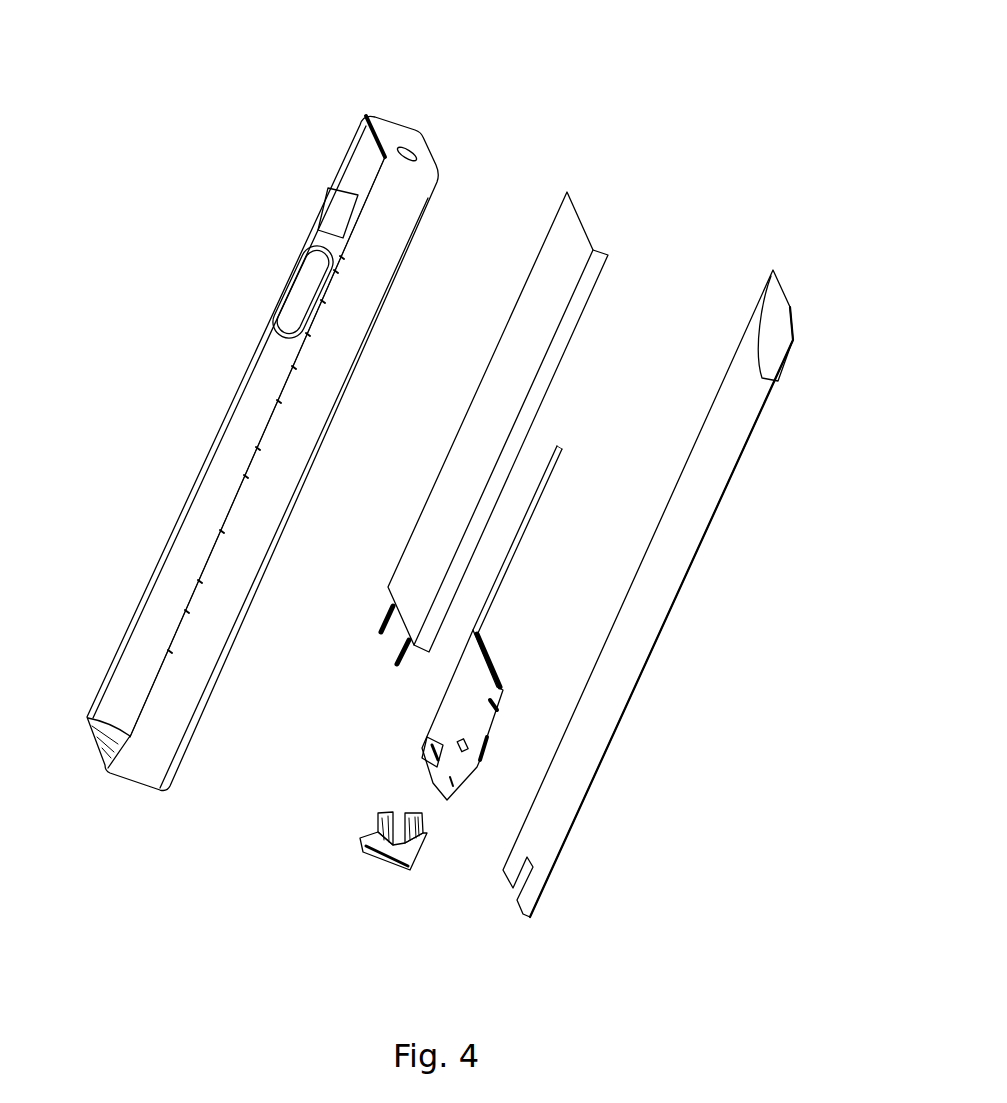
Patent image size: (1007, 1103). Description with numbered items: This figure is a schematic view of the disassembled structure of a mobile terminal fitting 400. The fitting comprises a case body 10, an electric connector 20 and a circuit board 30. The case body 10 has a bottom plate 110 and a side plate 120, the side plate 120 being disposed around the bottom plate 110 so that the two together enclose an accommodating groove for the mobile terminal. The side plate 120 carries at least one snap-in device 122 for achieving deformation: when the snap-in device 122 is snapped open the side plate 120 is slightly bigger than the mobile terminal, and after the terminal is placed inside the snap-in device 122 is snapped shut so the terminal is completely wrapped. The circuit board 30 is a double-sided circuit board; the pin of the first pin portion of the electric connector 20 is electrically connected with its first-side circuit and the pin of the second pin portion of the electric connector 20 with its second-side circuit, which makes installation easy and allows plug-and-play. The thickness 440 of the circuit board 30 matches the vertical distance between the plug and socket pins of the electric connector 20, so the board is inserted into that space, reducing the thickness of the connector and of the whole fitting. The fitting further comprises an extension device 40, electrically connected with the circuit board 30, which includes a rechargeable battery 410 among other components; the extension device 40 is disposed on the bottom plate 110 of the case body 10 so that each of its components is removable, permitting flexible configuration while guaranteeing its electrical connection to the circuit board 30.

The mobile terminal fitting 400 is at (178, 96).
The case body 10 is at (396, 118).
The bottom plate 110 is at (570, 793).
The side plate 120 is at (200, 460).
The snap-in device 122 is at (187, 612).
The rechargeable battery 410 is at (570, 194).
The extension device 40 is at (494, 664).
The thickness of the circuit board 440 is at (533, 437).
The circuit board 30 is at (434, 737).
The electric connector 20 is at (363, 840).